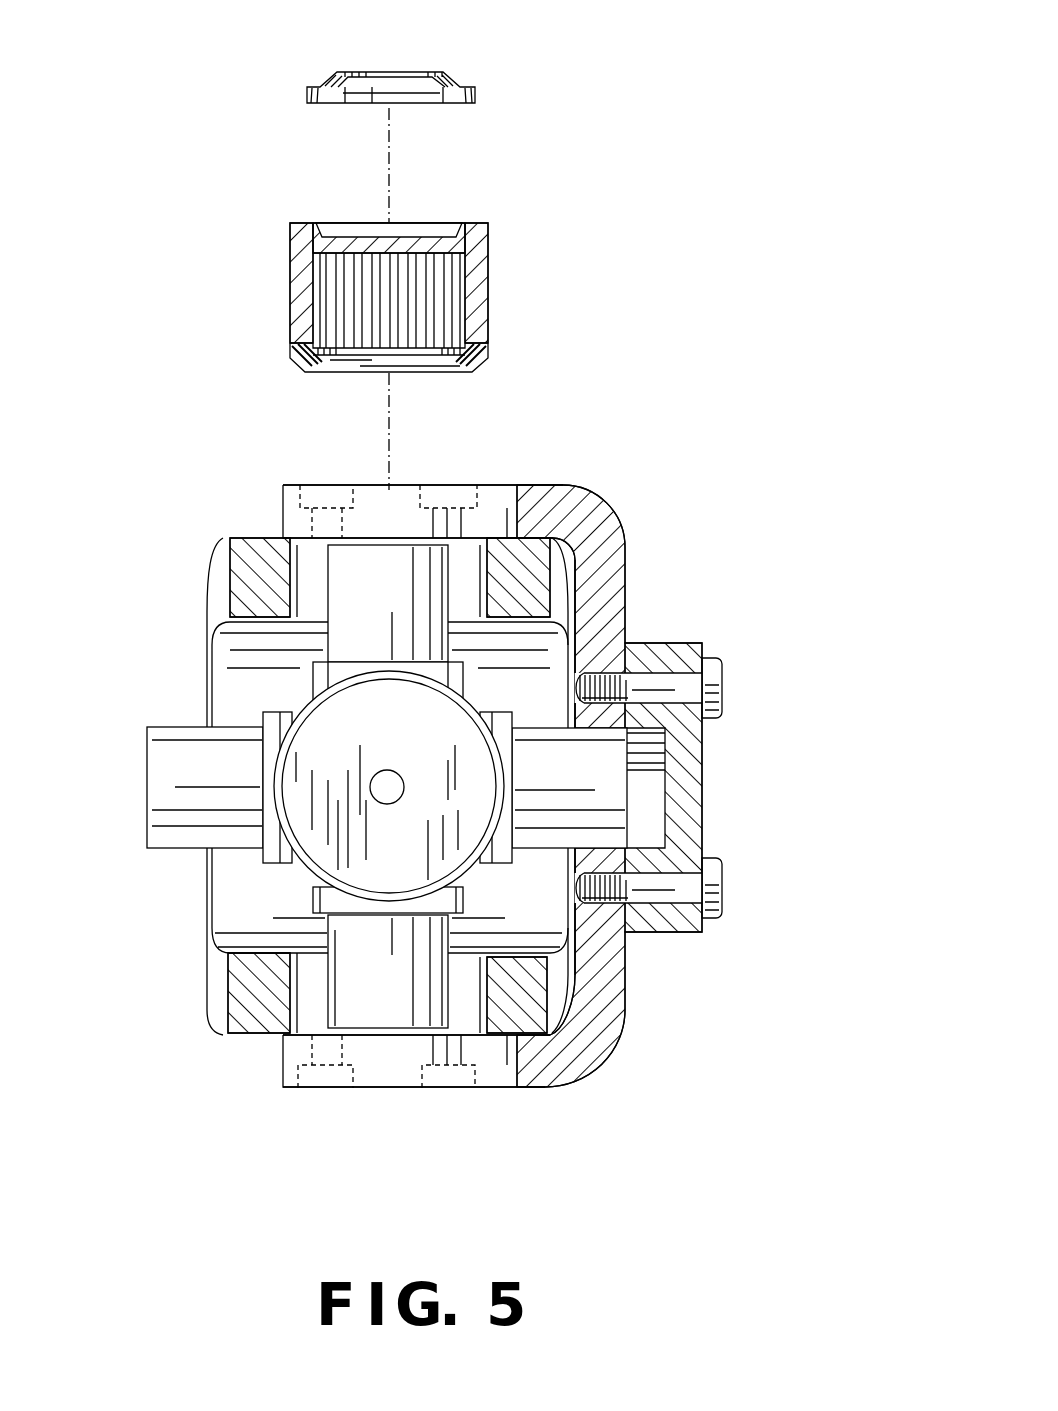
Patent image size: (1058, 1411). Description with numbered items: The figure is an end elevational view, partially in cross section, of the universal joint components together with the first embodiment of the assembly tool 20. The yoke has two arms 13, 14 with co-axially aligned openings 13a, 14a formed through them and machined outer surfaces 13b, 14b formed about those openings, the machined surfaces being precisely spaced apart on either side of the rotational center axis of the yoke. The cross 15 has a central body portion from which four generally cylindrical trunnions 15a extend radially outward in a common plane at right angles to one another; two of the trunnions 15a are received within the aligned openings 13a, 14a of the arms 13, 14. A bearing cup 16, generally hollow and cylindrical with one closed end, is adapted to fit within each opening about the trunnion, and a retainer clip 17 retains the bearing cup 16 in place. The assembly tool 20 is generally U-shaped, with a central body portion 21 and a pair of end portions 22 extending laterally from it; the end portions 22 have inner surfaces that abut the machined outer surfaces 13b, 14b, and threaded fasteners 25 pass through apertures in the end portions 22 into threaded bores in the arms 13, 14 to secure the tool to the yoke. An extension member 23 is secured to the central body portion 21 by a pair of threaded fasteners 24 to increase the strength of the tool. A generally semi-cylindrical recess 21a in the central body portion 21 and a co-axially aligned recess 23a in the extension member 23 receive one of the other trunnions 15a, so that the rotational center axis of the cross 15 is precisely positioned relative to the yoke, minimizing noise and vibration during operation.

The arm 13 is at (243, 993).
The opening 13a is at (307, 950).
The outer surface 13b is at (252, 1037).
The arm 14 is at (240, 573).
The opening 14a is at (307, 563).
The outer surface 14b is at (252, 538).
The cross 15 is at (413, 737).
The trunnion 15a is at (401, 590).
The bearing cup 16 is at (480, 258).
The retainer clip 17 is at (447, 73).
The assembly tool 20 is at (572, 750).
The central body portion 21 is at (617, 580).
The recess 21a is at (665, 757).
The end portion 22 is at (555, 497).
The extension member 23 is at (697, 790).
The recess 23a is at (647, 823).
The threaded fastener 24 is at (715, 683).
The threaded fastener 25 is at (453, 483).